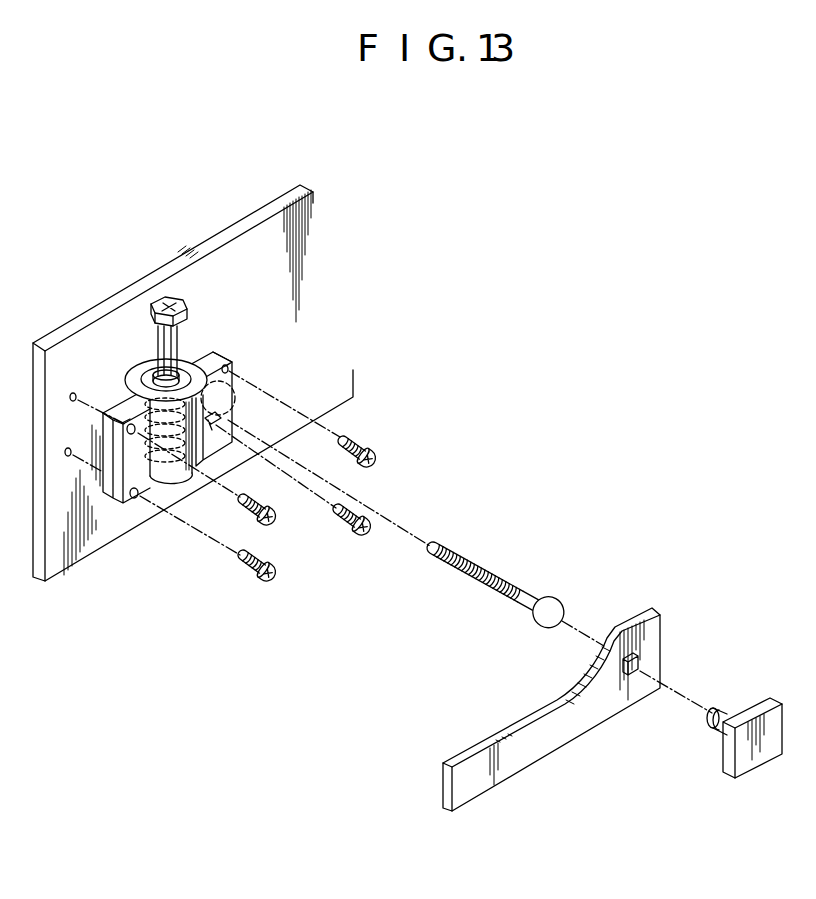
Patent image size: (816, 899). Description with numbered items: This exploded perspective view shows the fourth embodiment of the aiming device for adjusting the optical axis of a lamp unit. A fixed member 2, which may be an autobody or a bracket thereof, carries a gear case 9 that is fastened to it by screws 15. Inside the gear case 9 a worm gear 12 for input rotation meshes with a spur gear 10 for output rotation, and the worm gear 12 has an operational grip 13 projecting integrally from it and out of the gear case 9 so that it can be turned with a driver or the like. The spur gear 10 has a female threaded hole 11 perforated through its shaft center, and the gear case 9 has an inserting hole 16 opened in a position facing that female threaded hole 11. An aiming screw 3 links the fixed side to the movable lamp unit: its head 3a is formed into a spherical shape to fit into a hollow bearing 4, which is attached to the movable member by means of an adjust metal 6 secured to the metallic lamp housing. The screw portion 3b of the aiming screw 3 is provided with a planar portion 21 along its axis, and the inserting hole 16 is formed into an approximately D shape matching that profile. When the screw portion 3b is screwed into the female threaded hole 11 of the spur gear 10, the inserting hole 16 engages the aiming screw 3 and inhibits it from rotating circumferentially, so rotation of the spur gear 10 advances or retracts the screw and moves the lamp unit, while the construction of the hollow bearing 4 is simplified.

The fixed member 2 is at (220, 237).
The aiming screw 3 is at (502, 589).
The head of the aiming screw 3a is at (565, 600).
The screw portion of the aiming screw 3b is at (431, 576).
The hollow bearing 4 is at (730, 710).
The adjust metal 6 is at (470, 748).
The gear case 9 is at (136, 374).
The spur gear 10 is at (214, 352).
The female threaded hole 11 is at (232, 411).
The worm gear 12 is at (120, 405).
The operational grip 13 is at (158, 300).
The screws 15 is at (360, 441).
The inserting hole 16 is at (215, 420).
The planar portion 21 is at (490, 553).